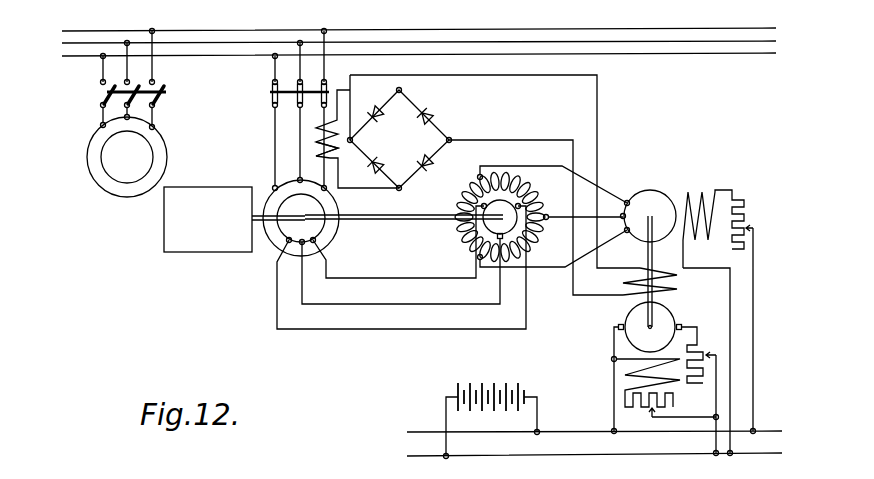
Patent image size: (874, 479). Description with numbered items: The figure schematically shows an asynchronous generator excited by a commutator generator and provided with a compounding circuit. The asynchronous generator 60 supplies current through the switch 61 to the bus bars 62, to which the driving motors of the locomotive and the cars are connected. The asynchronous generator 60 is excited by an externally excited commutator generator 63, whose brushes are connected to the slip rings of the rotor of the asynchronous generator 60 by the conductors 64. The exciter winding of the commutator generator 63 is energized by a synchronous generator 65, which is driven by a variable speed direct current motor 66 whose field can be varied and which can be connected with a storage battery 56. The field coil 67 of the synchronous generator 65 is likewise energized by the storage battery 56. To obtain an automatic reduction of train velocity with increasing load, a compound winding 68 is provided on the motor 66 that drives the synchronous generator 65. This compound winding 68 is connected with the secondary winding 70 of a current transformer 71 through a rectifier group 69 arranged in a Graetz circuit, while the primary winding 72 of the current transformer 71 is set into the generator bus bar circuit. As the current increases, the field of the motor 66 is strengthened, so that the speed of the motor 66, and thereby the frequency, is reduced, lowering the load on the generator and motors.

The storage battery 56 is at (518, 372).
The asynchronous generator 60 is at (338, 232).
The switch 61 is at (272, 92).
The bus bars 62 is at (458, 29).
The commutator generator 63 is at (543, 190).
The conductors 64 is at (425, 270).
The synchronous generator 65 is at (658, 178).
The variable speed direct current motor 66 is at (687, 313).
The field coil 67 is at (704, 194).
The compound winding 68 is at (637, 256).
The rectifier group 69 is at (391, 149).
The secondary winding 70 is at (340, 160).
The current transformer 71 is at (316, 133).
The primary winding 72 is at (330, 146).